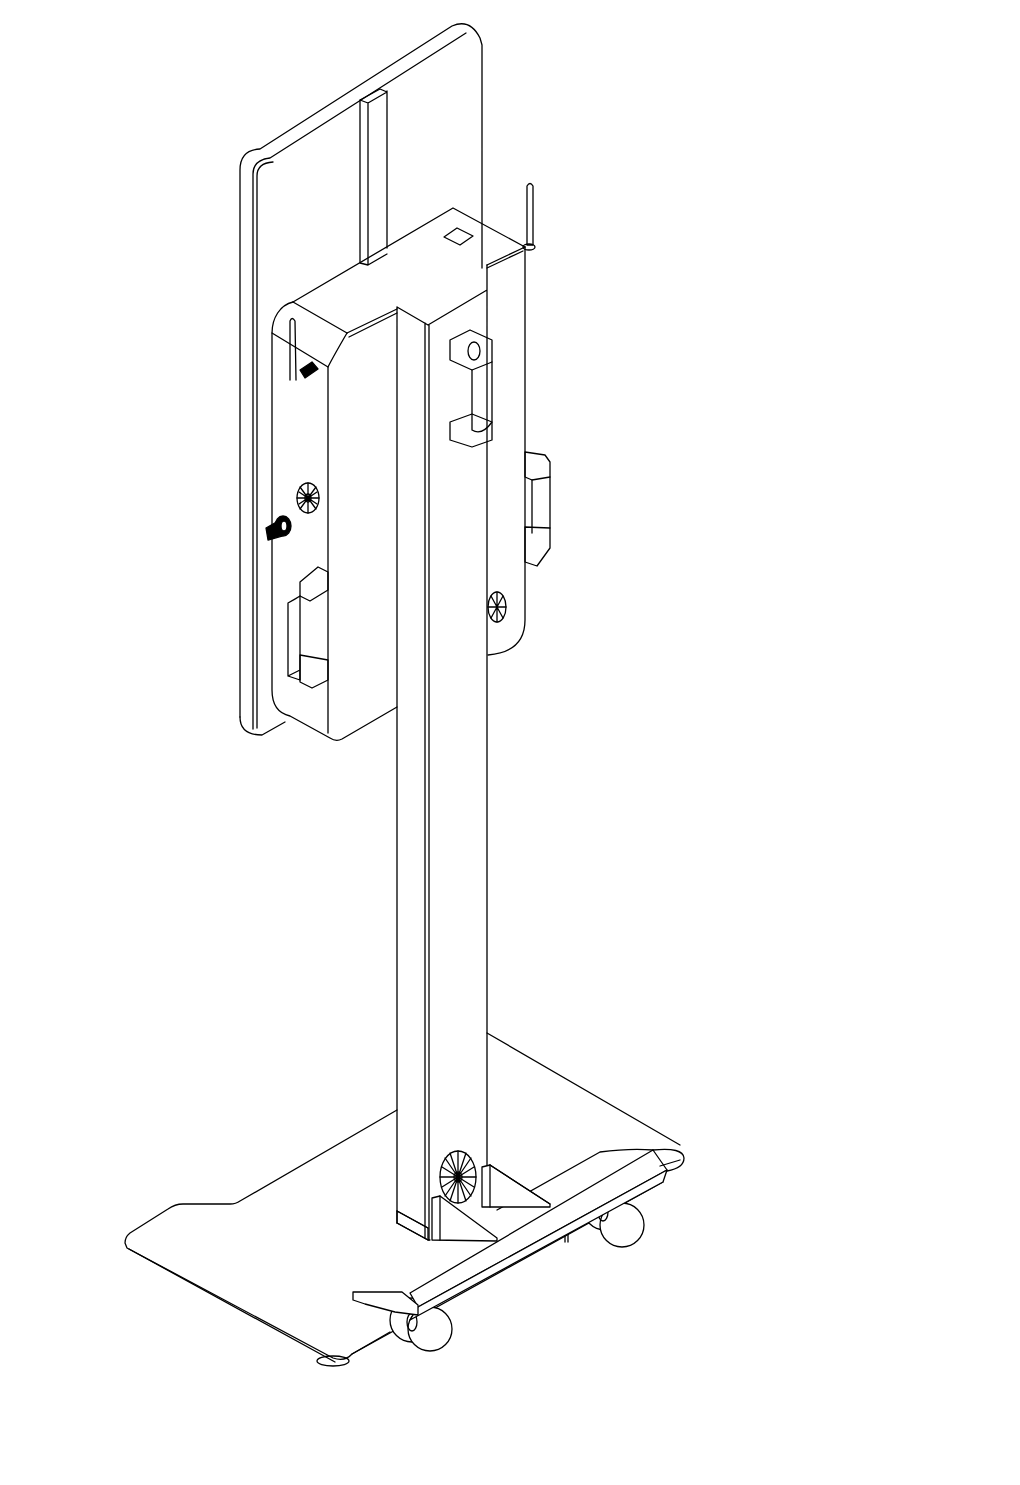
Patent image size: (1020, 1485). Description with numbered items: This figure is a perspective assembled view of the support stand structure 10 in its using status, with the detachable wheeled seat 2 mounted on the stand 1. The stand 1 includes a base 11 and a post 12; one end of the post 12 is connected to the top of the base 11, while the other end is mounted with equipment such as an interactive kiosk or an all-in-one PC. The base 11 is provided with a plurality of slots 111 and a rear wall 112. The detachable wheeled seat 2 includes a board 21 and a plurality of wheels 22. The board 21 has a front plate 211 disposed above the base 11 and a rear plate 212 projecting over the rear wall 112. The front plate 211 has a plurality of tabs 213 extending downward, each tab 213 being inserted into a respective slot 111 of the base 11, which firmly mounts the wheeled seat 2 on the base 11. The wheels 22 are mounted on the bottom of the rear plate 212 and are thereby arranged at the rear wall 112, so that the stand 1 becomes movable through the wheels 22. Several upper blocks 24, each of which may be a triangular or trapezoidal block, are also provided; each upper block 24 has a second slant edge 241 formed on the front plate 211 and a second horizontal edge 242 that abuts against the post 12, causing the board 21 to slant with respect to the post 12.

The support stand structure 10 is at (253, 38).
The stand 1 is at (500, 887).
The base 11 is at (305, 1187).
The slots 111 is at (330, 1345).
The rear wall 112 is at (375, 1340).
The post 12 is at (475, 930).
The detachable wheeled seat 2 is at (636, 1145).
The board 21 is at (615, 1150).
The front plate 211 is at (583, 1170).
The rear plate 212 is at (600, 1172).
The tabs 213 is at (350, 1298).
The wheels 22 is at (455, 1322).
The upper block 24 is at (448, 1218).
The second slant edge 241 is at (515, 1205).
The second horizontal edge 242 is at (427, 1212).